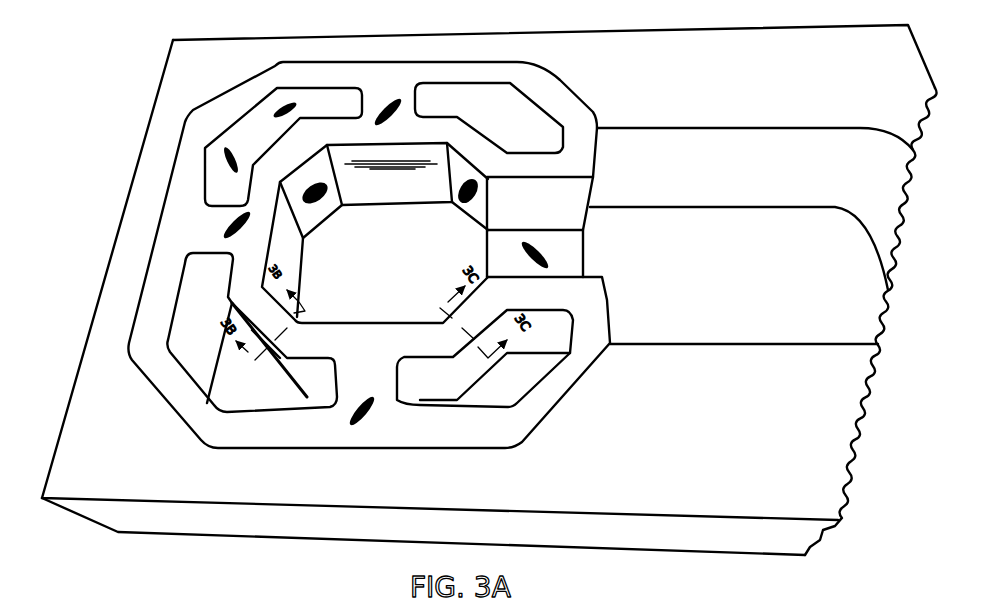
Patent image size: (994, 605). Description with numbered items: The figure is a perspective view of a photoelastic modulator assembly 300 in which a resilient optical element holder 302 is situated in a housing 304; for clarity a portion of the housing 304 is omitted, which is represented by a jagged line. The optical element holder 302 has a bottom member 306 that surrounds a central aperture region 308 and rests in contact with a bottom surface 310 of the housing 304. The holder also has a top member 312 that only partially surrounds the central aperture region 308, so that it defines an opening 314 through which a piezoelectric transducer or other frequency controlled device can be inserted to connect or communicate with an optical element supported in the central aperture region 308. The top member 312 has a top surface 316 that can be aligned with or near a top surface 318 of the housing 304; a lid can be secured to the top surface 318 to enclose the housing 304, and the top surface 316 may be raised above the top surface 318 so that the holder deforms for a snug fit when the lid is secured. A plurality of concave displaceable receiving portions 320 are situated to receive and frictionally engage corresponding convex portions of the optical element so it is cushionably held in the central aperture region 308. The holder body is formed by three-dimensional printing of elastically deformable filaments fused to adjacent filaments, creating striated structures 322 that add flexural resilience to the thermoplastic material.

The photoelastic modulator assembly 300 is at (150, 92).
The optical element holder 302 is at (458, 77).
The housing 304 is at (113, 313).
The bottom member 306 is at (570, 267).
The central aperture region 308 is at (380, 302).
The bottom surface 310 is at (617, 237).
The top member 312 is at (177, 218).
The opening 314 is at (557, 243).
The top surface 316 is at (577, 370).
The top surface 318 is at (700, 77).
The concave displaceable receiving portions 320 is at (313, 185).
The striated structures 322 is at (297, 110).